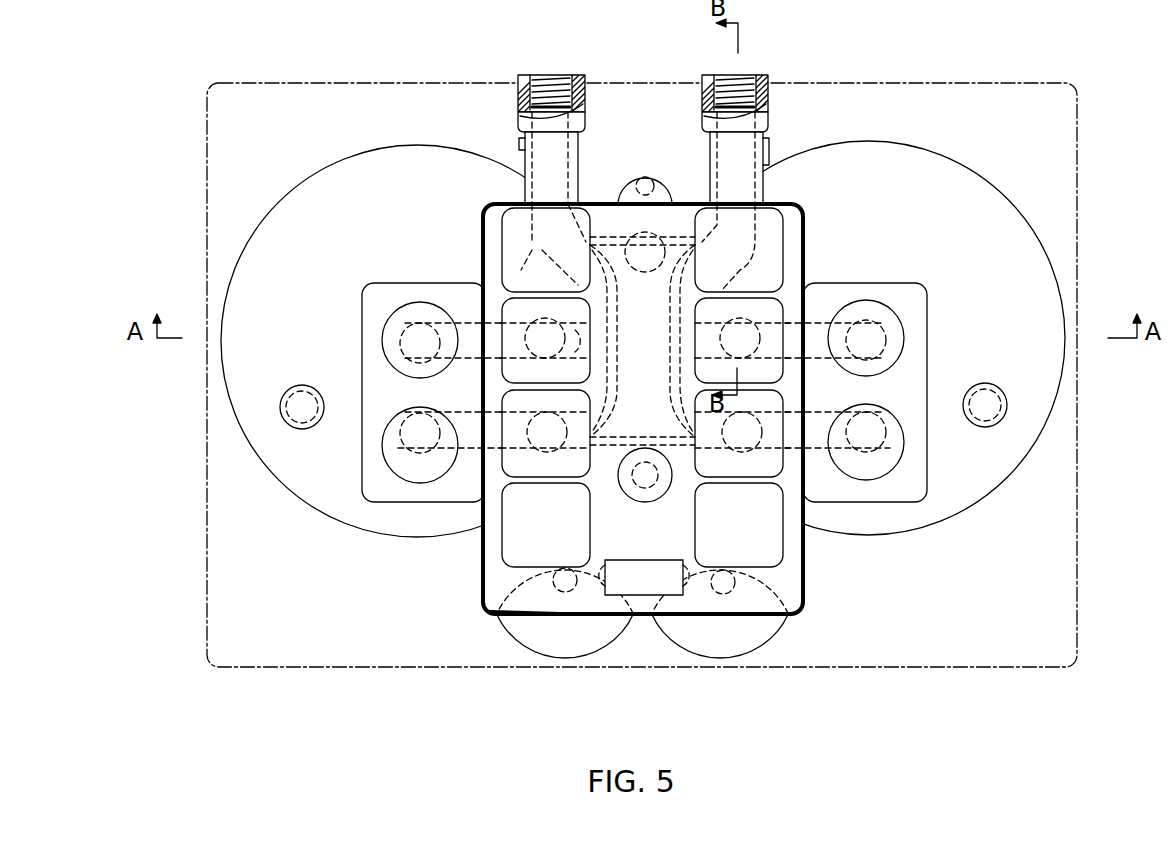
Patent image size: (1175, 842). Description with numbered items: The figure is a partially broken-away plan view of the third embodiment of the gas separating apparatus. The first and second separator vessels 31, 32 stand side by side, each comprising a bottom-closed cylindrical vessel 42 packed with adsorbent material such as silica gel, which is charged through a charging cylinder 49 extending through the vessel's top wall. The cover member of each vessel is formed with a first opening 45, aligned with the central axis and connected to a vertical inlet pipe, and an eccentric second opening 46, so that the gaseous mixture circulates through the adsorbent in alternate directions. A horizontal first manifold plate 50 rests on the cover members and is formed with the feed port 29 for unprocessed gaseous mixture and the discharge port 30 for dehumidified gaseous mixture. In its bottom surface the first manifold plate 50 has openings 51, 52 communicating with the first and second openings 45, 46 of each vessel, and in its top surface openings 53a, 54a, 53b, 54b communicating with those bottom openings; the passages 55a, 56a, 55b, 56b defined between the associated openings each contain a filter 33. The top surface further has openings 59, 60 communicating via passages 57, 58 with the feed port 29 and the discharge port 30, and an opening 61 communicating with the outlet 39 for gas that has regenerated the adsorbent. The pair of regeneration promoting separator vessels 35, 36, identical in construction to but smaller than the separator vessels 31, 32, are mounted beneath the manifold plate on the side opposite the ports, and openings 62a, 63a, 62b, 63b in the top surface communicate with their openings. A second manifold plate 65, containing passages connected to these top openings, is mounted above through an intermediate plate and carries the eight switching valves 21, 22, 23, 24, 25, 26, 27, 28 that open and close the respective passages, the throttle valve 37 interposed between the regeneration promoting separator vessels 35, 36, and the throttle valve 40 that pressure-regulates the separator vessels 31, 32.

The switching valve 21 is at (500, 305).
The switching valve 22 is at (772, 302).
The switching valve 23 is at (513, 216).
The switching valve 24 is at (770, 218).
The switching valve 25 is at (515, 463).
The switching valve 26 is at (790, 468).
The switching valve 27 is at (513, 548).
The switching valve 28 is at (770, 556).
The feed port 29 is at (561, 76).
The discharge port 30 is at (753, 78).
The first separator vessel 31 is at (267, 186).
The second separator vessel 32 is at (1022, 184).
The filter 33 is at (381, 335).
The regeneration promoting separator vessel 35 is at (568, 650).
The regeneration promoting separator vessel 36 is at (743, 650).
The throttle valve 37 is at (667, 588).
The outlet 39 is at (645, 180).
The throttle valve 40 is at (648, 500).
The cylindrical vessel 42 is at (320, 176).
The first opening 45 is at (657, 291).
The second opening 46 is at (657, 417).
The charging cylinder 49 is at (302, 386).
The first manifold plate 50 is at (804, 240).
The opening 51 is at (410, 330).
The opening 52 is at (403, 428).
The opening 53a is at (556, 326).
The opening 53b is at (730, 332).
The opening 54a is at (553, 423).
The opening 54b is at (752, 414).
The passage 55a is at (462, 322).
The passage 55b is at (820, 325).
The passage 56a is at (468, 448).
The passage 56b is at (822, 448).
The passage 57 is at (537, 250).
The passage 58 is at (737, 261).
The opening 59 is at (582, 348).
The opening 60 is at (690, 440).
The opening 61 is at (650, 236).
The opening 62a is at (558, 585).
The opening 62b is at (733, 587).
The opening 63a is at (599, 583).
The opening 63b is at (690, 583).
The second manifold plate 65 is at (496, 612).